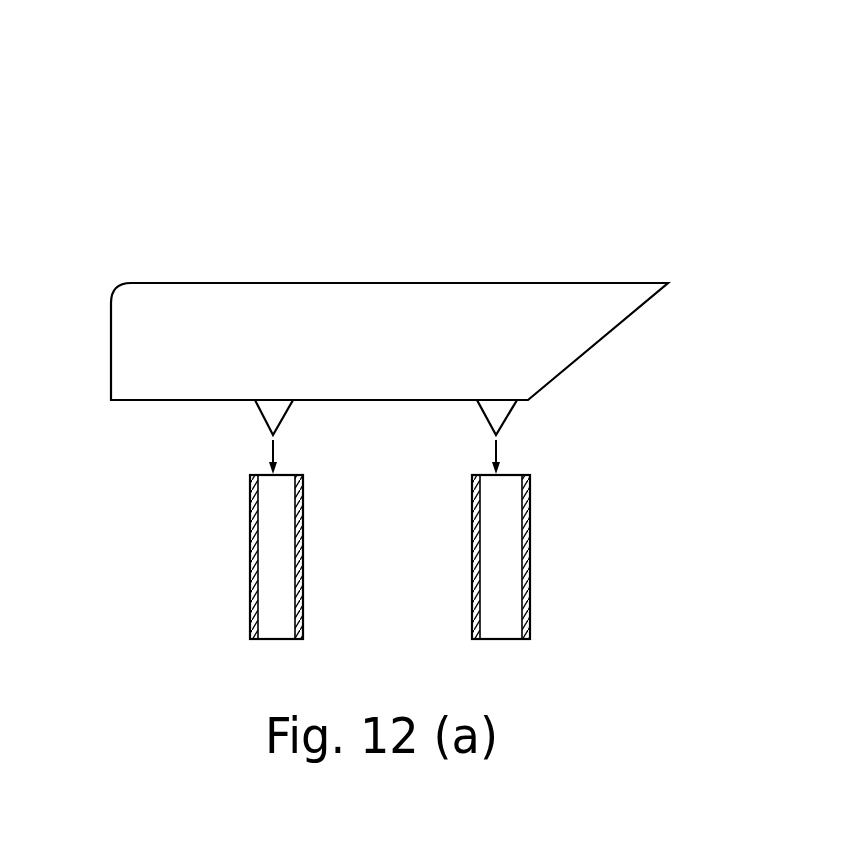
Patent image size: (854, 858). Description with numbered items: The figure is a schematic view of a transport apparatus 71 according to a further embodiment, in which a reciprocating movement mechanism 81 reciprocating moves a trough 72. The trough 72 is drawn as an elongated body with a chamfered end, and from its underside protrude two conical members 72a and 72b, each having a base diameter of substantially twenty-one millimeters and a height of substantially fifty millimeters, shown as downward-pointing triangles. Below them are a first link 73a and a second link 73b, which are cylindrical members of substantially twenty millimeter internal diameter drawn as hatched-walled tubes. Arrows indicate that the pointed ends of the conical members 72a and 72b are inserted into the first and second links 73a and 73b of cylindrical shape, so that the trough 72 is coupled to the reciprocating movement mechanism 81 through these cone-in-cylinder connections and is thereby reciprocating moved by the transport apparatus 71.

The transport apparatus 71 is at (473, 131).
The reciprocating movement mechanism 81 is at (553, 204).
The trough 72 is at (193, 298).
The conical member 72a is at (260, 417).
The conical member 72b is at (504, 418).
The first link 73a is at (250, 560).
The second link 73b is at (528, 562).